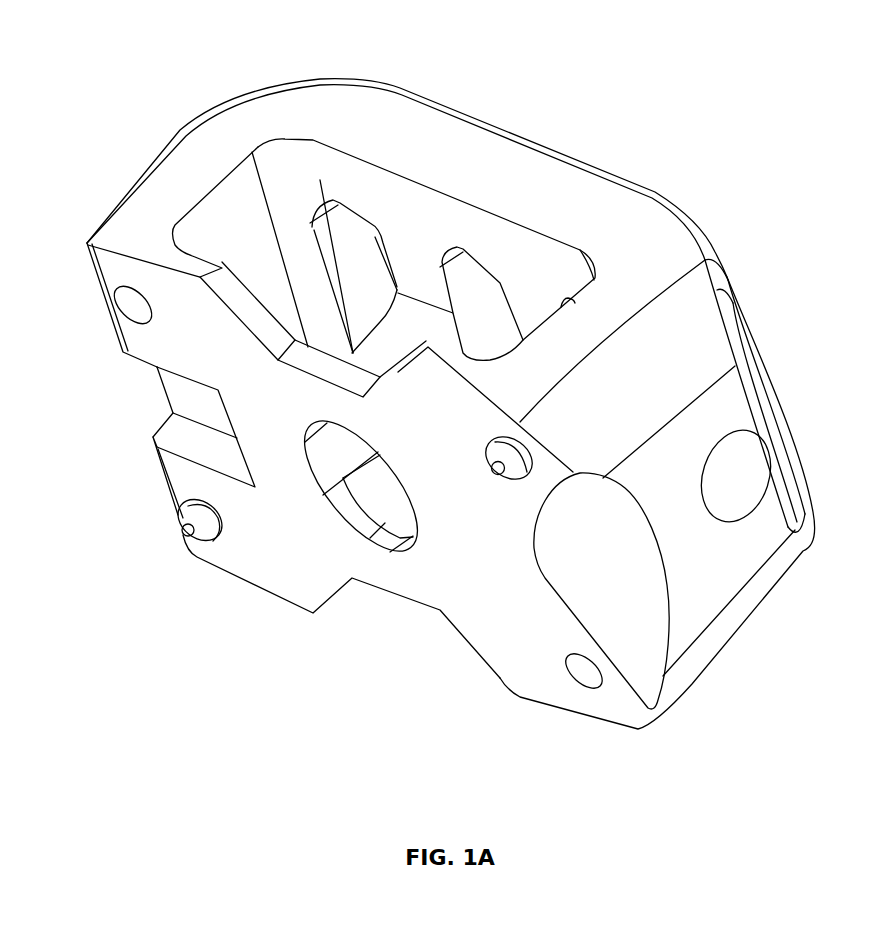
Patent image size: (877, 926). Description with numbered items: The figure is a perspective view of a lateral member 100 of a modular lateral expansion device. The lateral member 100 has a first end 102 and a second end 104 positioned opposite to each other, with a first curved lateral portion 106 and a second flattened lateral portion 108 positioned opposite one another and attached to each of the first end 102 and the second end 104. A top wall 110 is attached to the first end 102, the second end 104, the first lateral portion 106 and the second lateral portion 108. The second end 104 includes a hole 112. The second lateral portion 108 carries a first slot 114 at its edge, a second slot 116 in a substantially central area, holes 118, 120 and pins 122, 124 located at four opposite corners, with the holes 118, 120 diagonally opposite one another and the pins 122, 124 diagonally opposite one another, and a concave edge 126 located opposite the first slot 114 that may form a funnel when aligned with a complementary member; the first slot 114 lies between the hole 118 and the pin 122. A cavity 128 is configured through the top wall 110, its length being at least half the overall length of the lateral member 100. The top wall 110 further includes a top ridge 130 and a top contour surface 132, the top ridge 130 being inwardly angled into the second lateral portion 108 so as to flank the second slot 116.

The lateral member 100 is at (184, 746).
The first end 102 is at (127, 193).
The second end 104 is at (742, 392).
The first curved lateral portion 106 is at (413, 213).
The second flattened lateral portion 108 is at (228, 567).
The top wall 110 is at (652, 192).
The hole 112 is at (740, 477).
The first slot 114 is at (183, 396).
The second slot 116 is at (377, 502).
The hole 118 is at (113, 305).
The hole 120 is at (588, 690).
The pin 122 is at (183, 530).
The pin 124 is at (506, 483).
The concave edge 126 is at (645, 677).
The cavity 128 is at (482, 202).
The top ridge 130 is at (300, 355).
The top contour surface 132 is at (555, 188).